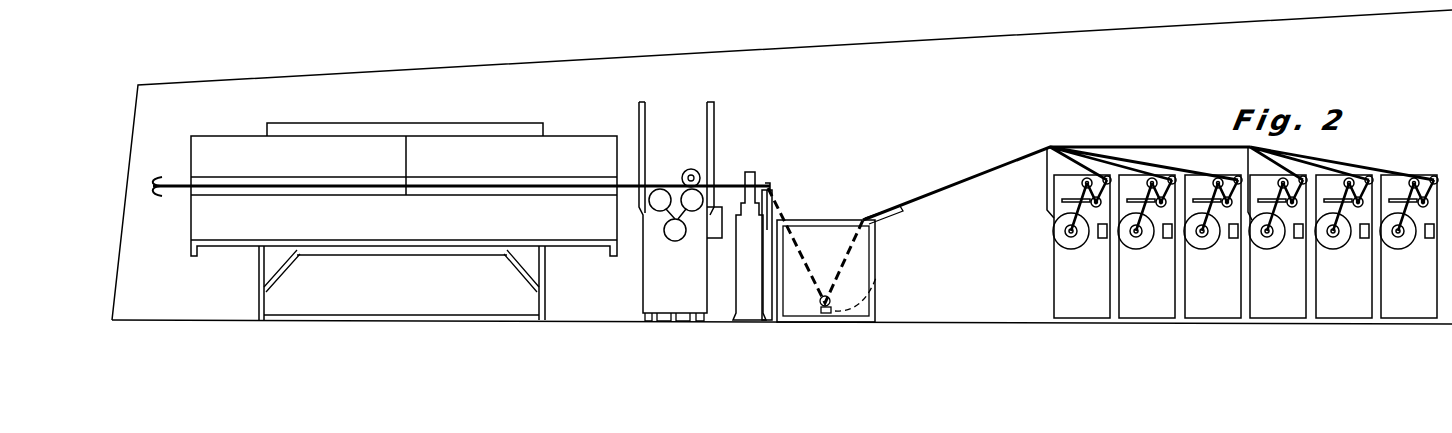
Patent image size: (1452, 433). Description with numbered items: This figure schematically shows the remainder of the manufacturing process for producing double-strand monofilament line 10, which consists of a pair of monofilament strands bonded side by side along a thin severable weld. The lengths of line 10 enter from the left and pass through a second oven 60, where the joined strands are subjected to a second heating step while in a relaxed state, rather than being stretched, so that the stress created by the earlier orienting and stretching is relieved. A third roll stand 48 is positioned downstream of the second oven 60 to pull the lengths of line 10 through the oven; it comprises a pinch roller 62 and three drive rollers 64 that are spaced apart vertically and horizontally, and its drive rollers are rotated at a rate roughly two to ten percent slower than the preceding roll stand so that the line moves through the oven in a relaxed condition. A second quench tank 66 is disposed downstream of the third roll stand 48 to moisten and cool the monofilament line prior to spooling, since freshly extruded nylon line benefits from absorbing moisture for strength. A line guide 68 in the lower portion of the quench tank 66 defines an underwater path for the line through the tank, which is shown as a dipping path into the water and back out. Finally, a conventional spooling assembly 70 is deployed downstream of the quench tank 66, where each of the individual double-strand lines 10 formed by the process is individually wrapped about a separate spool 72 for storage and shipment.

The double-strand monofilament line 10 is at (170, 184).
The third roll stand 48 is at (643, 282).
The second oven 60 is at (258, 161).
The pinch roller 62 is at (689, 170).
The drive rollers 64 is at (690, 212).
The second quench tank 66 is at (832, 220).
The line guide 68 is at (877, 275).
The spooling assembly 70 is at (1052, 252).
The spools 72 is at (1132, 243).